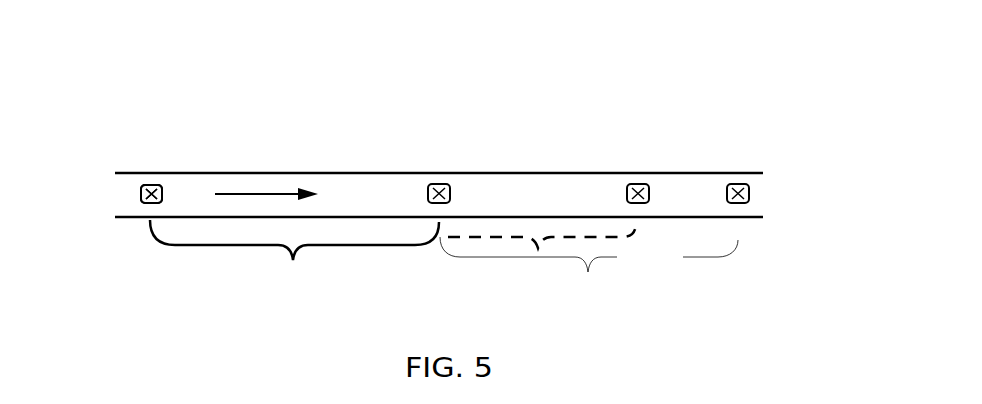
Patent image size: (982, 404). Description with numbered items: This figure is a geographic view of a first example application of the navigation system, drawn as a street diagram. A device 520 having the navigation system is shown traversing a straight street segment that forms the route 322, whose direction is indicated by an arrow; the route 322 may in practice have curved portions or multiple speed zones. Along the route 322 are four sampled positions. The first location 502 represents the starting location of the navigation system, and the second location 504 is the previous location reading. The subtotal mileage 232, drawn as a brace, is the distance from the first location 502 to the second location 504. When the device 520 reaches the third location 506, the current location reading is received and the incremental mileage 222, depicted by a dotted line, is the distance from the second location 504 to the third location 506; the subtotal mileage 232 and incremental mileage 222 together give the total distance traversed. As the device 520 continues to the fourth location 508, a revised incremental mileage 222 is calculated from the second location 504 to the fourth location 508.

The first location 502 is at (153, 184).
The second location 504 is at (439, 183).
The third location 506 is at (634, 183).
The fourth location 508 is at (737, 183).
The route 322 is at (318, 172).
The device 520 is at (141, 196).
The subtotal mileage 232 is at (294, 275).
The incremental mileage 222 is at (589, 283).